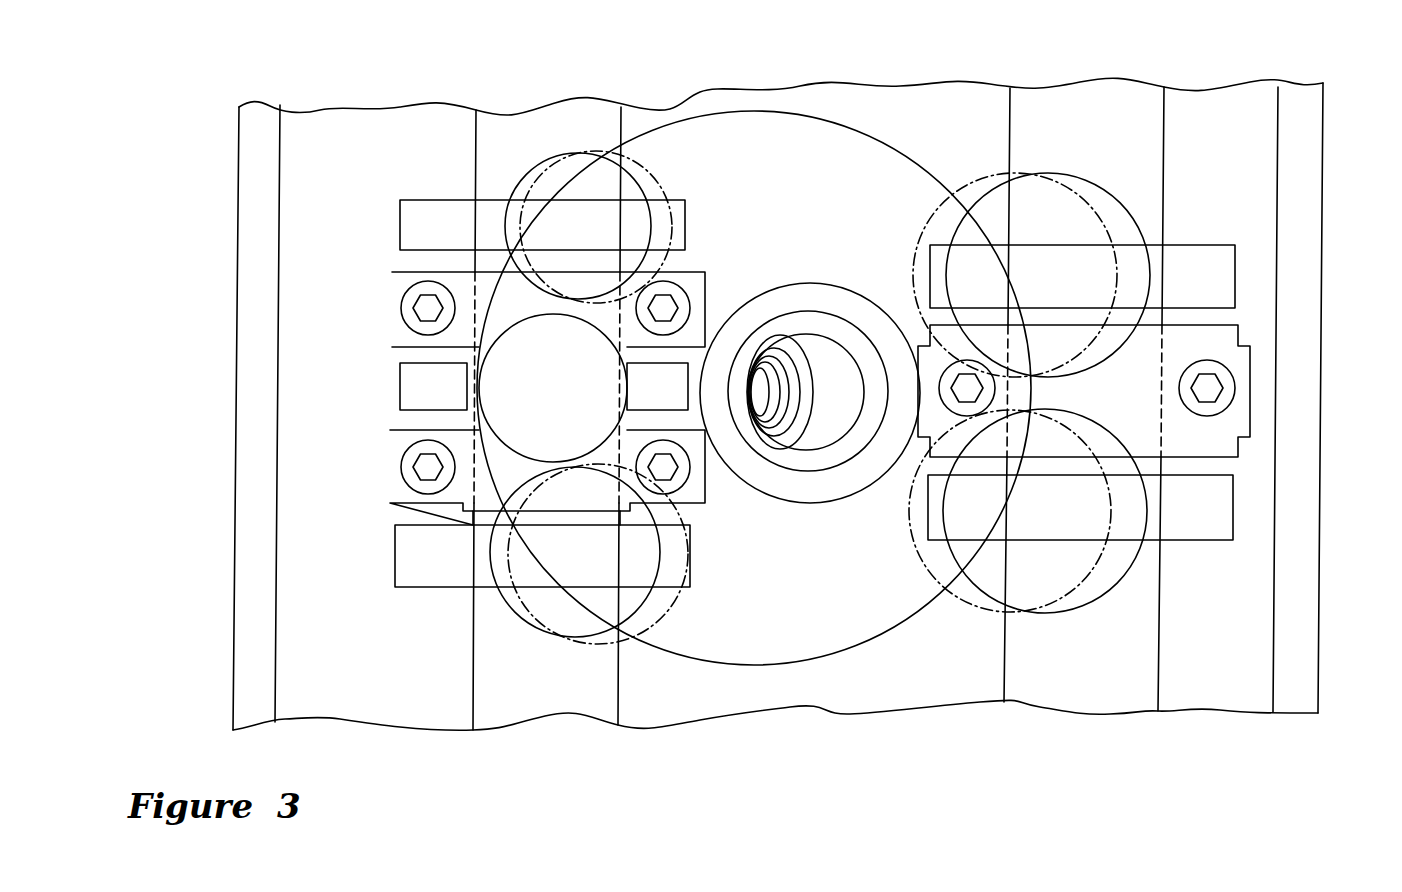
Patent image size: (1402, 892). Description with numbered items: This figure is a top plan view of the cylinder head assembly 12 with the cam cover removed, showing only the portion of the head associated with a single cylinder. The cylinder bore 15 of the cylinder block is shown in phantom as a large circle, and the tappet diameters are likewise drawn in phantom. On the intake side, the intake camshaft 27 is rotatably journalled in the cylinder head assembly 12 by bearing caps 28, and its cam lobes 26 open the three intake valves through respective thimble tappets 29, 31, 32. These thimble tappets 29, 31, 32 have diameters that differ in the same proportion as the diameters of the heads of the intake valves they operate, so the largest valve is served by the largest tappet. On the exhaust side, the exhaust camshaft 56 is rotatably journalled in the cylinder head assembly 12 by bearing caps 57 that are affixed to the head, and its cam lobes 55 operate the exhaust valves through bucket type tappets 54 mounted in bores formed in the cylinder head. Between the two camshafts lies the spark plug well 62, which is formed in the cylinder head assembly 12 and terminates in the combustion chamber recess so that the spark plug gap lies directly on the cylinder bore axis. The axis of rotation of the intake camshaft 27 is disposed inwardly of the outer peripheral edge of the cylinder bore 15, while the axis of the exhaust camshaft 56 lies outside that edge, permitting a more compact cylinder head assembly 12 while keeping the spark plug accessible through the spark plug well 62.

The cylinder head assembly 12 is at (1325, 229).
The cylinder bore 15 is at (823, 653).
The cam lobes 26 is at (432, 361).
The intake camshaft 27 is at (470, 678).
The bearing caps 28 is at (443, 270).
The thimble tappet 29 is at (445, 522).
The thimble tappet 31 is at (547, 637).
The thimble tappet 32 is at (573, 153).
The bucket type tappets 54 is at (1052, 173).
The cam lobes 55 is at (1157, 344).
The exhaust camshaft 56 is at (1160, 662).
The bearing caps 57 is at (1190, 330).
The spark plug well 62 is at (835, 428).